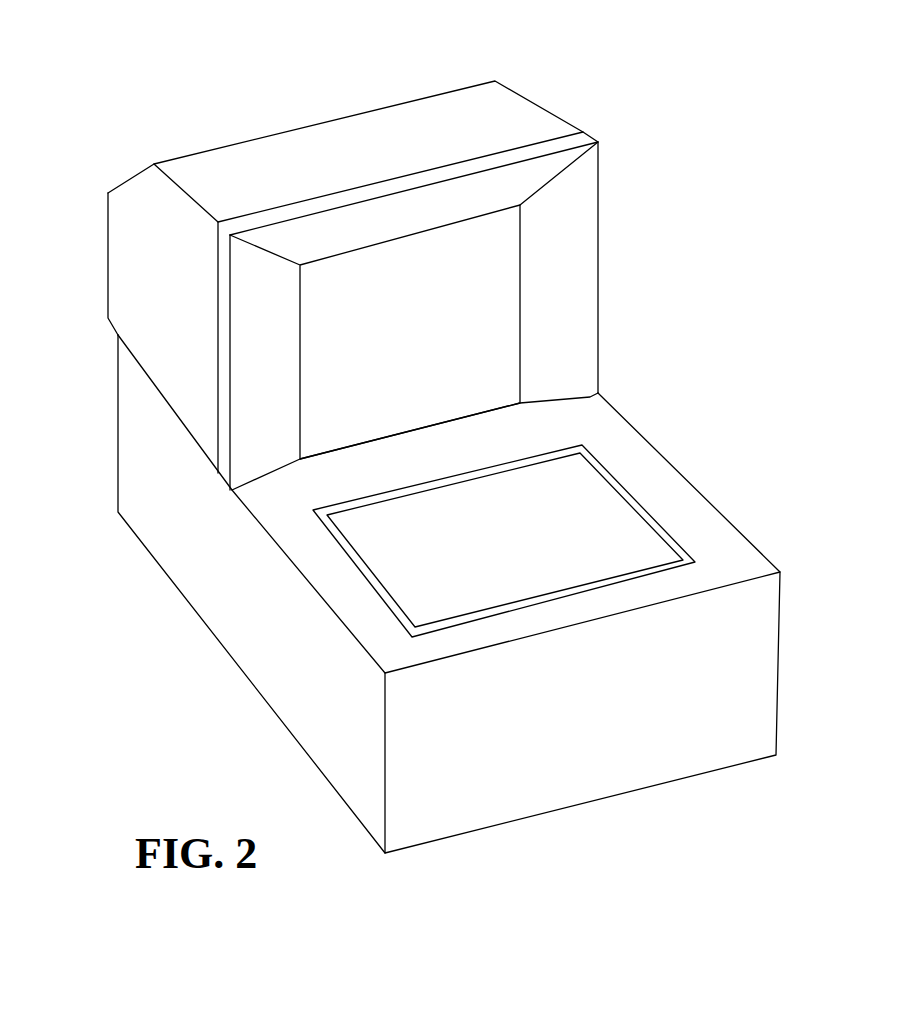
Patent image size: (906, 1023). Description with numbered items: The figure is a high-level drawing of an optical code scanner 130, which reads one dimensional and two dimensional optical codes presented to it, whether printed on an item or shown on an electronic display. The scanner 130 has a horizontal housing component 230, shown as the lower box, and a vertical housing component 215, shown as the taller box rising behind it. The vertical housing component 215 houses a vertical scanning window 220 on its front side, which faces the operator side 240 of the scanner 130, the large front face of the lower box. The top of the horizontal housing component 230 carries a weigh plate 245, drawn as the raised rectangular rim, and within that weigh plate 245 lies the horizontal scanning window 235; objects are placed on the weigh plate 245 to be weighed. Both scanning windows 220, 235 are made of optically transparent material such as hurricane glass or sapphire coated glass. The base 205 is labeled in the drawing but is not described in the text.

The optical code scanner 130 is at (136, 40).
The base housing 205 is at (138, 460).
The vertical housing component 215 is at (512, 113).
The vertical scanning window 220 is at (468, 282).
The horizontal housing component 230 is at (647, 472).
The horizontal scanning window 235 is at (613, 552).
The operator side 240 is at (603, 672).
The weigh plate 245 is at (598, 455).